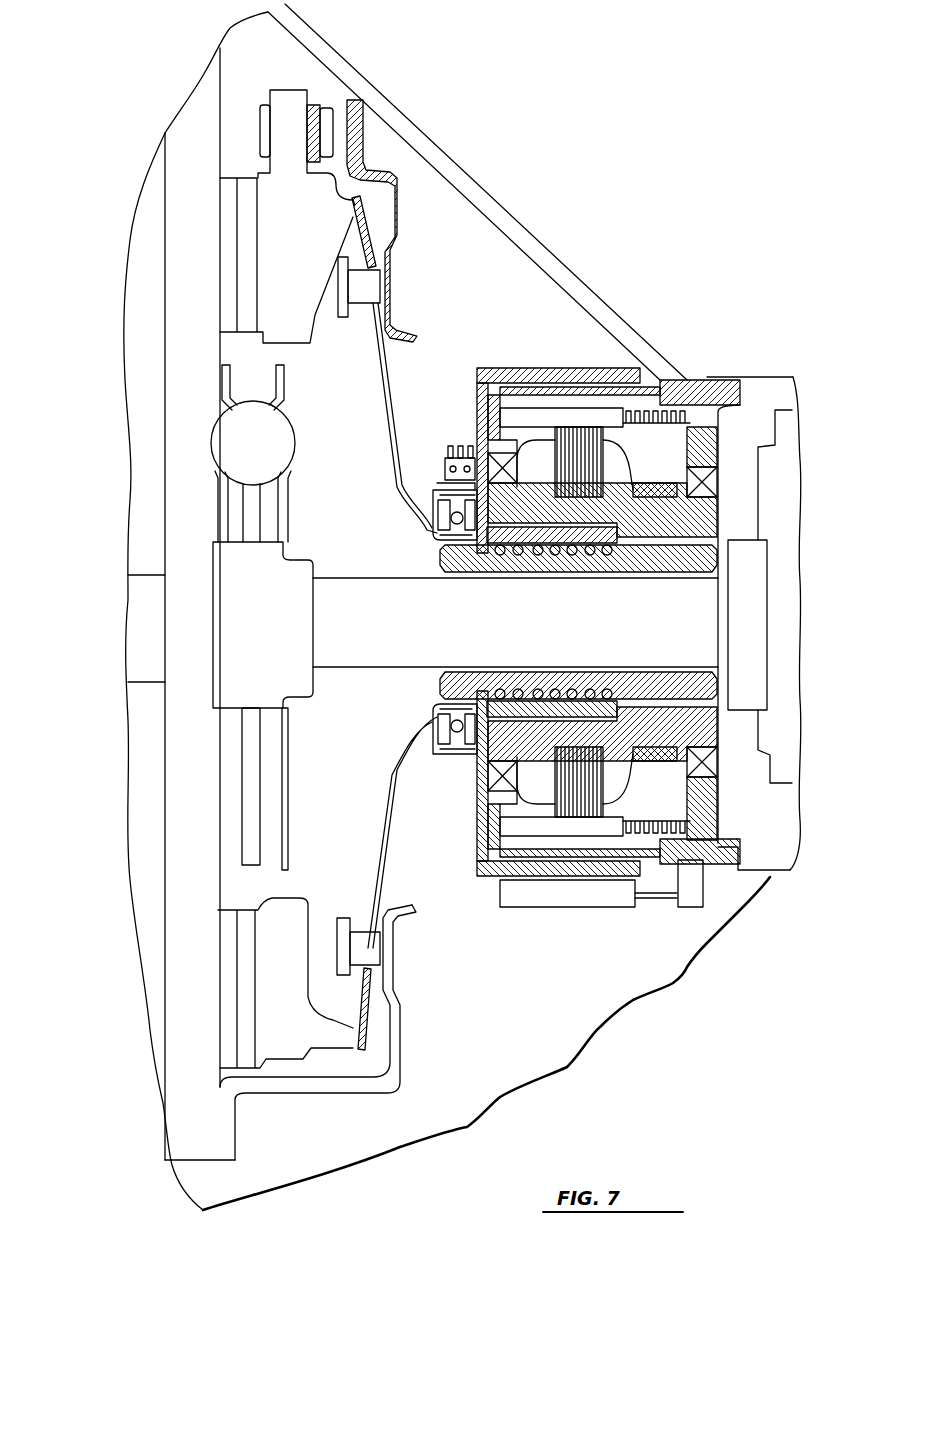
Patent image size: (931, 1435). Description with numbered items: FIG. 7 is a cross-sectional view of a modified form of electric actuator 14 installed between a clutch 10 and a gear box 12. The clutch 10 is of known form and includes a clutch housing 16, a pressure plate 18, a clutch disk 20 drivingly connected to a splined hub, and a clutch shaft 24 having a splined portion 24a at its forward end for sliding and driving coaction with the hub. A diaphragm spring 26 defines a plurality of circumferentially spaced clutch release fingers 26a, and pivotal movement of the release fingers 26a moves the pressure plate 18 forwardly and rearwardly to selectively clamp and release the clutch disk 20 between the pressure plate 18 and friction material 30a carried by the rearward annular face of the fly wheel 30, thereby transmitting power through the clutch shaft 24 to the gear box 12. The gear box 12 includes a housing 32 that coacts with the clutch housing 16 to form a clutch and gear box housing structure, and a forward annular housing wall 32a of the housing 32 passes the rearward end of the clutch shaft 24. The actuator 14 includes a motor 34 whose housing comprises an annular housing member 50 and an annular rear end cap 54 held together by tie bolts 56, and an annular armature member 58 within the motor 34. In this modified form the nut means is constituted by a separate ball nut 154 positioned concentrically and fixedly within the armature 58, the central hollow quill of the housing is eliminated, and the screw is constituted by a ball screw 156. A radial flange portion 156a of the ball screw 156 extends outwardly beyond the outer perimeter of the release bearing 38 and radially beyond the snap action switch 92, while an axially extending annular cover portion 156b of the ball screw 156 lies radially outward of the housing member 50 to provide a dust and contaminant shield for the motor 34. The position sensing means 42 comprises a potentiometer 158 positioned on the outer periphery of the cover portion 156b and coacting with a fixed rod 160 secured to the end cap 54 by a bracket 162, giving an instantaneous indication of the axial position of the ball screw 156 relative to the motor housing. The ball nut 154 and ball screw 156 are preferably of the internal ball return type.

The clutch 10 is at (160, 540).
The gear box 12 is at (808, 598).
The actuator 14 is at (586, 344).
The clutch housing 16 is at (437, 136).
The pressure plate 18 is at (293, 88).
The clutch disk 20 is at (247, 187).
The clutch shaft 24 is at (410, 636).
The splined portion 24a is at (290, 638).
The diaphragm spring 26 is at (355, 232).
The clutch release fingers 26a is at (392, 432).
The fly wheel 30 is at (180, 403).
The friction material 30a is at (227, 996).
The housing 32 is at (780, 375).
The forward annular housing wall 32a is at (745, 730).
The motor 34 is at (692, 384).
The release bearing 38 is at (426, 546).
The position sensing means 42 is at (521, 930).
The annular housing member 50 is at (508, 352).
The annular rear end cap 54 is at (712, 800).
The tie bolts 56 is at (610, 412).
The annular armature member 58 is at (700, 518).
The snap action switch 92 is at (445, 467).
The ball nut 154 is at (563, 545).
The ball screw 156 is at (681, 573).
The radial flange portion 156a is at (497, 398).
The annular cover portion 156b is at (538, 370).
The potentiometer 158 is at (600, 907).
The fixed rod 160 is at (658, 900).
The bracket 162 is at (700, 887).